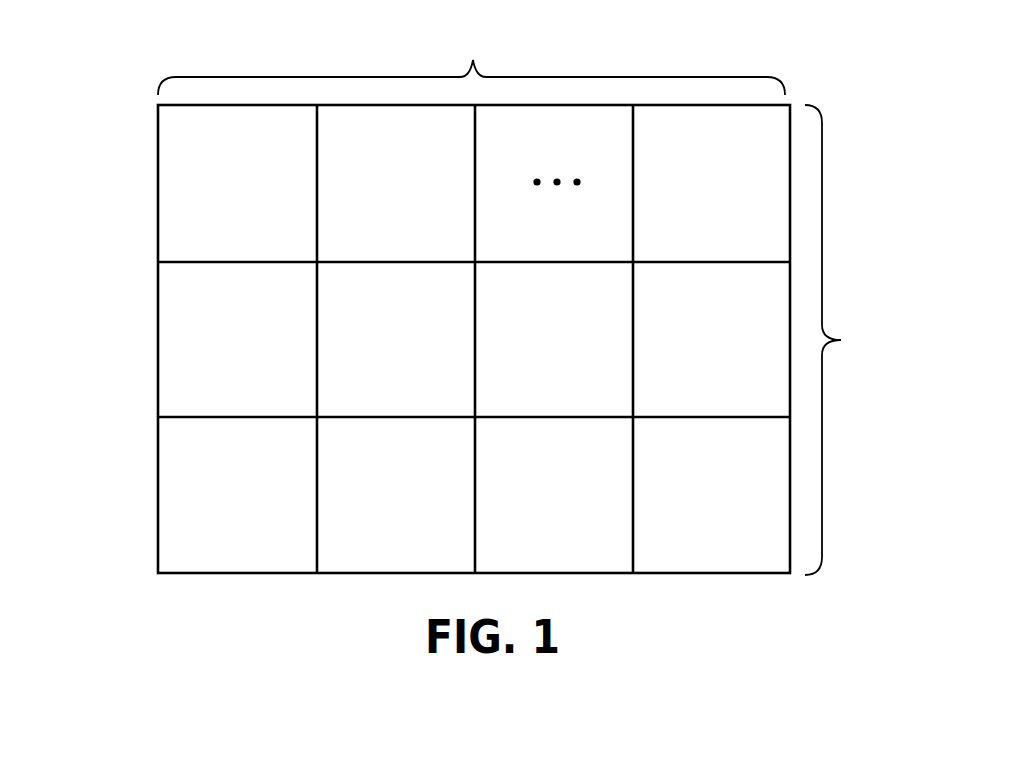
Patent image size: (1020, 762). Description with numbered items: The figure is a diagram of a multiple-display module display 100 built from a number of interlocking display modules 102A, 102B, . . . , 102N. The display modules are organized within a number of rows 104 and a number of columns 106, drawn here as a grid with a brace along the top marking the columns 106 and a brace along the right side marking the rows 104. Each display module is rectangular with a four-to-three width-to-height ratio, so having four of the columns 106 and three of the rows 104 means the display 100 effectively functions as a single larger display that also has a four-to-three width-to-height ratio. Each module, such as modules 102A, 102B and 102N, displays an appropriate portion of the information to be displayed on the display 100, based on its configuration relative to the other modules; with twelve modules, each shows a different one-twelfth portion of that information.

The multiple-display module display 100 is at (416, 339).
The interlocking display module 102A is at (270, 176).
The interlocking display module 102B is at (423, 176).
The interlocking display module 102N is at (750, 504).
The rows 104 is at (849, 340).
The columns 106 is at (471, 60).